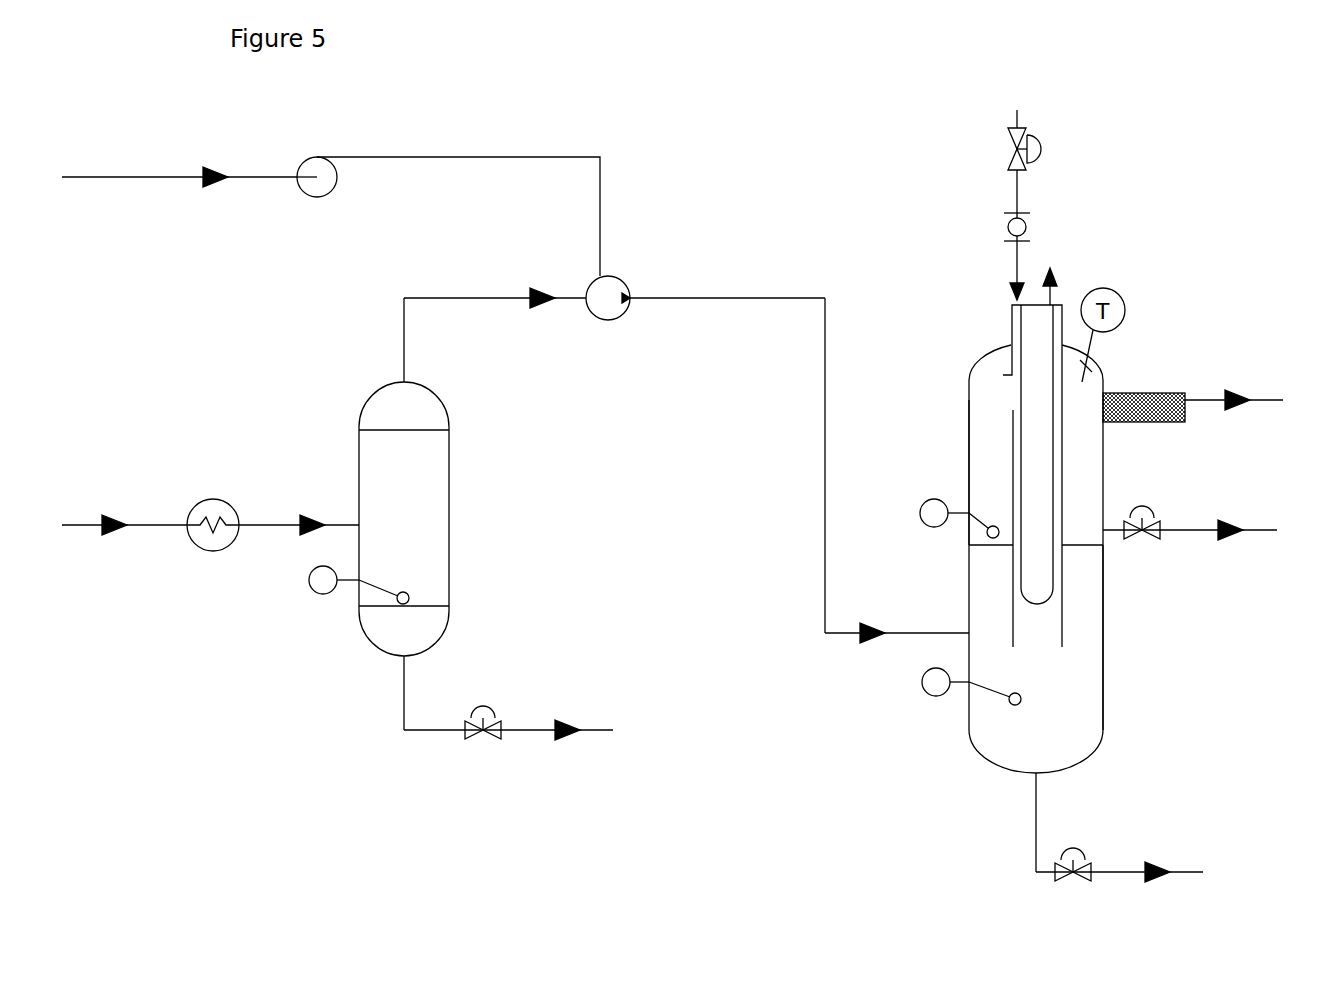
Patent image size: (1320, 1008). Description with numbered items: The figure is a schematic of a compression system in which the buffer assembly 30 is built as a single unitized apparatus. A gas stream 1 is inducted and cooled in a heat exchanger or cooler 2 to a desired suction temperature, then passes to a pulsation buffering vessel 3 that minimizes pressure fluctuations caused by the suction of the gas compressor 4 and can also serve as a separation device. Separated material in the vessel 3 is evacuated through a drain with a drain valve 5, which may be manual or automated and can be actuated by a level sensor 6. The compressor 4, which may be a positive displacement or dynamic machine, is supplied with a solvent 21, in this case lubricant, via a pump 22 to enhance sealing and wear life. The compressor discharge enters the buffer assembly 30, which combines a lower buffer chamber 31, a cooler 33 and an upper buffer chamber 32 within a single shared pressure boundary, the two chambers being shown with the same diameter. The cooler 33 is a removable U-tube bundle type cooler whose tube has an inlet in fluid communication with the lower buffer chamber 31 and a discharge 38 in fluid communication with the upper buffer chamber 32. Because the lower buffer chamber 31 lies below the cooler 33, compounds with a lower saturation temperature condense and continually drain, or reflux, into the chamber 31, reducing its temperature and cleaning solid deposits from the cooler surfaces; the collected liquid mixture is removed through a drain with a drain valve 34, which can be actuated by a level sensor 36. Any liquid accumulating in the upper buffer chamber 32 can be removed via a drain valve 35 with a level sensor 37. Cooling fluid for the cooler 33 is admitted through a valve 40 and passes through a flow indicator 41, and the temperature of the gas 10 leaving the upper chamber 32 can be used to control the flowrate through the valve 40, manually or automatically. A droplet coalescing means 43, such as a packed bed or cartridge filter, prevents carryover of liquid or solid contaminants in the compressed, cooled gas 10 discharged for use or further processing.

The gas stream 1 is at (107, 548).
The heat exchanger or cooler 2 is at (272, 505).
The pulsation buffering vessel 3 is at (423, 477).
The gas compressor 4 is at (686, 441).
The drain valve 5 is at (508, 724).
The level sensor 6 is at (347, 596).
The compressed, cooled gas 10 is at (1234, 373).
The solvent 21 is at (179, 211).
The pump 22 is at (448, 194).
The buffer assembly 30 is at (1105, 476).
The lower buffer chamber 31 is at (1102, 637).
The upper buffer chamber 32 is at (969, 472).
The cooler 33 is at (1037, 475).
The drain valve 34 is at (1119, 827).
The drain valve 35 is at (1190, 520).
The level sensor 36 is at (971, 708).
The level sensor 37 is at (939, 512).
The discharge 38 is at (1021, 476).
The valve 40 is at (989, 164).
The flow indicator 41 is at (985, 256).
The droplet coalescing means 43 is at (1144, 390).